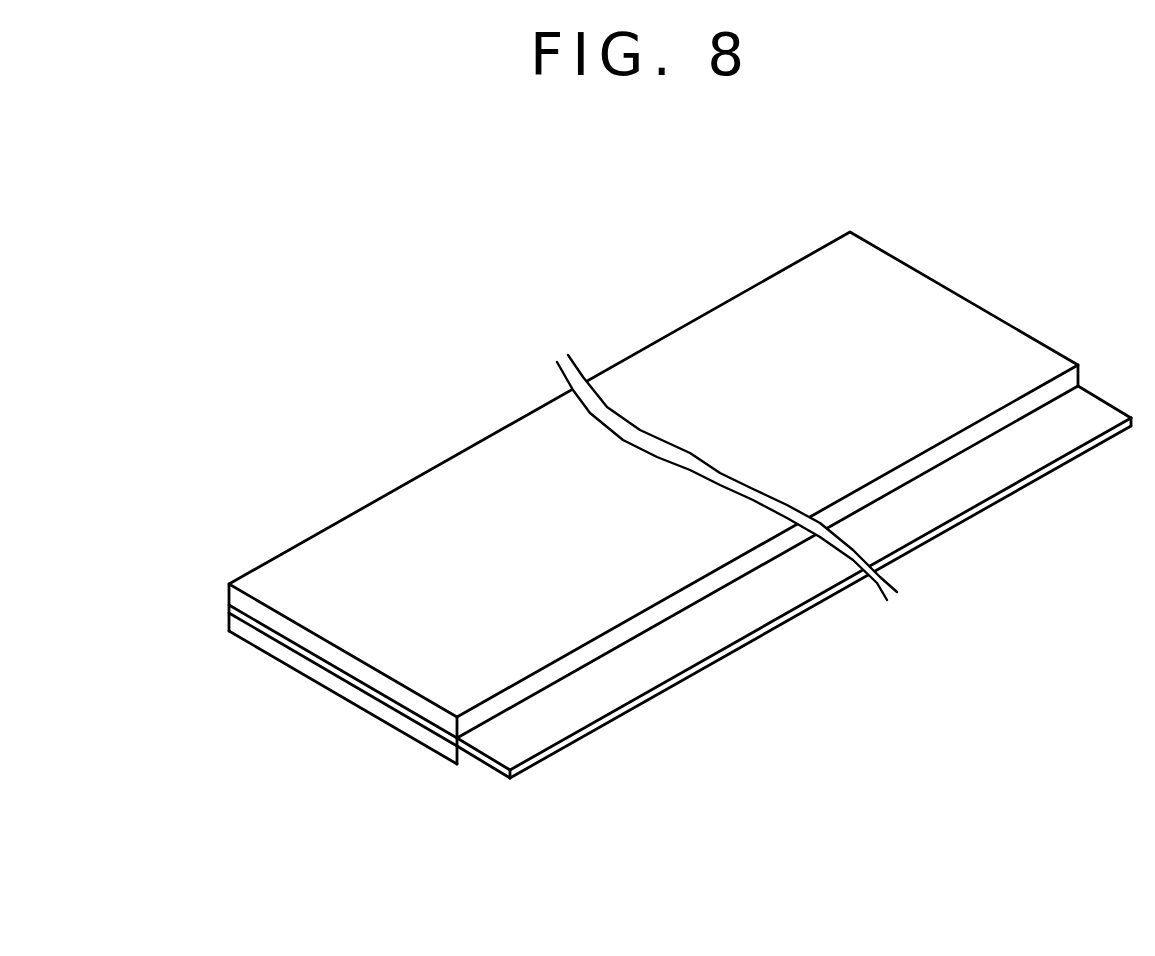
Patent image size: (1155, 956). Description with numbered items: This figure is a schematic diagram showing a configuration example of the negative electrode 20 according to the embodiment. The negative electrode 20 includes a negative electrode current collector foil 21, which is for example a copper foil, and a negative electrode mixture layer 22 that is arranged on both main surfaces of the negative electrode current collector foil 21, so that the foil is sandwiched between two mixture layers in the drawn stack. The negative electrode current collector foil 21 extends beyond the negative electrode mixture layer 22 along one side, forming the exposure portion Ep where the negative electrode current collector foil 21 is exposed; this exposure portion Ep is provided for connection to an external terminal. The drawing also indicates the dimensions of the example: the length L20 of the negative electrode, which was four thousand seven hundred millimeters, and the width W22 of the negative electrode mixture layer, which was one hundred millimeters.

The negative electrode 20 is at (652, 540).
The negative electrode current collector foil 21 is at (746, 614).
The negative electrode mixture layer 22 is at (340, 655).
The length of negative electrode L20 is at (805, 205).
The width of negative electrode mixture layer W22 is at (1117, 345).
The exposure portion Ep is at (958, 492).